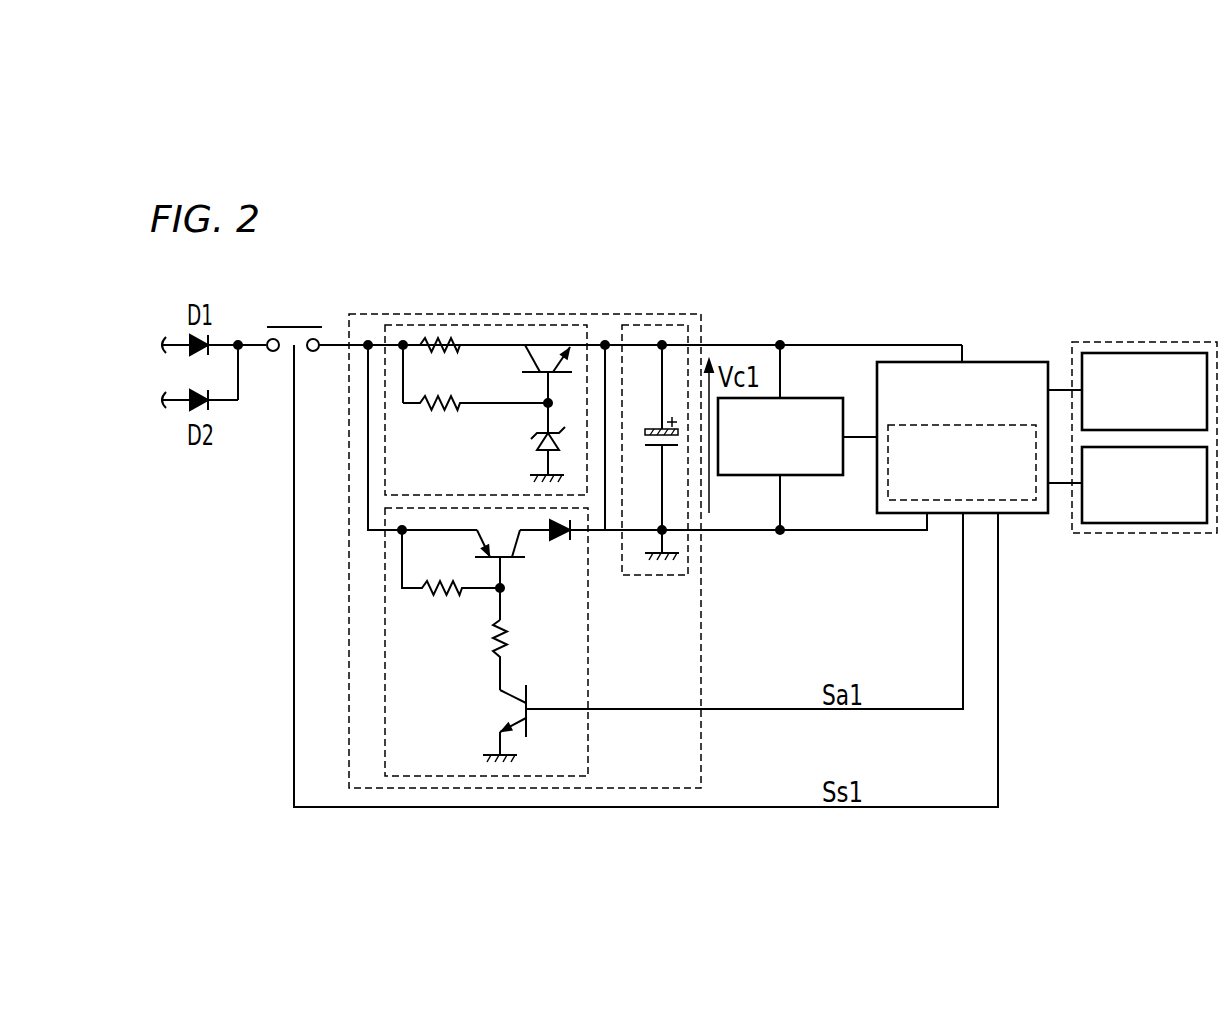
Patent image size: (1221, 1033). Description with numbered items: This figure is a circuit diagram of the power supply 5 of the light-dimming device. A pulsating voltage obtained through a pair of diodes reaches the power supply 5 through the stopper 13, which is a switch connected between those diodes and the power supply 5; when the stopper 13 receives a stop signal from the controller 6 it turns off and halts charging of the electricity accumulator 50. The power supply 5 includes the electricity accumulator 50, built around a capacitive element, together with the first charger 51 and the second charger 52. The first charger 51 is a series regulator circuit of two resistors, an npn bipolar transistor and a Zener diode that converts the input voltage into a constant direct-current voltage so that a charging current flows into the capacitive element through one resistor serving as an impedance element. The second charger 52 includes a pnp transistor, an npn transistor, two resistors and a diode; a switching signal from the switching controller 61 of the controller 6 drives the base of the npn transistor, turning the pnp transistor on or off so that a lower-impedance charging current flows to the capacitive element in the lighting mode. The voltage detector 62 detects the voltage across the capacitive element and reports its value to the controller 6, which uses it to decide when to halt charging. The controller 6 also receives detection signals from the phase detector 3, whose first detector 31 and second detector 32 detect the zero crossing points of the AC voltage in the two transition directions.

The stopper 13 is at (290, 322).
The power supply 5 is at (577, 313).
The first charger 51 is at (480, 325).
The second charger 52 is at (588, 642).
The electricity accumulator 50 is at (652, 325).
The controller 6 is at (998, 362).
The switching controller 61 is at (888, 486).
The voltage detector 62 is at (815, 405).
The phase detector 3 is at (1204, 342).
The first detector 31 is at (1127, 356).
The second detector 32 is at (1147, 520).